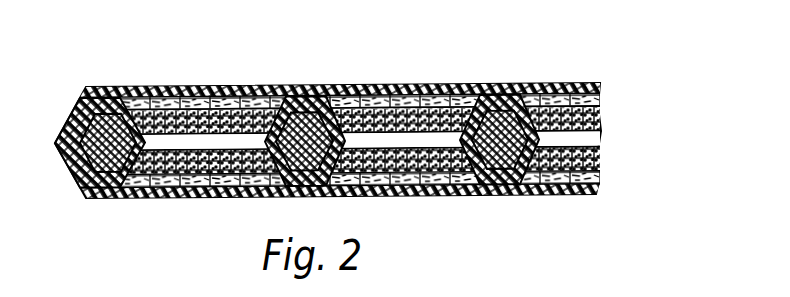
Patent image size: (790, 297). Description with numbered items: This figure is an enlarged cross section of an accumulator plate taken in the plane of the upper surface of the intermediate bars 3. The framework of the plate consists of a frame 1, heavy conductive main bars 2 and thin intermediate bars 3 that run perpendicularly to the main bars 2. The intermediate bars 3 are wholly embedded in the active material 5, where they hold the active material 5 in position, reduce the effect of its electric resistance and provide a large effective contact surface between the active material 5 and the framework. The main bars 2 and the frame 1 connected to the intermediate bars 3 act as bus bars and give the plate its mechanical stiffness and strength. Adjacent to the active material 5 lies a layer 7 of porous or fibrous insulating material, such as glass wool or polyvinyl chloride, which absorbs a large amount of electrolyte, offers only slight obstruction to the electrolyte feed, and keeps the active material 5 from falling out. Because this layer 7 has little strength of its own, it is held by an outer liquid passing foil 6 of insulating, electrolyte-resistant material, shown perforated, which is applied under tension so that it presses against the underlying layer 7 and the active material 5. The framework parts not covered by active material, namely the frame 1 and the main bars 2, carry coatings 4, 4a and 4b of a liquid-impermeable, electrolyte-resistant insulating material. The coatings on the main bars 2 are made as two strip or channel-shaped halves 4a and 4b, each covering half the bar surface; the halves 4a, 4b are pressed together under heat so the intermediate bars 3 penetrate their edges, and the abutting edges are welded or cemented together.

The frame 1 is at (84, 111).
The main bars 2 is at (335, 92).
The intermediate bars 3 is at (378, 145).
The coating 4 is at (113, 99).
The coating half 4a is at (300, 107).
The coating half 4b is at (248, 184).
The active material 5 is at (253, 126).
The outer liquid passing foil 6 is at (175, 92).
The layer 7 is at (208, 106).